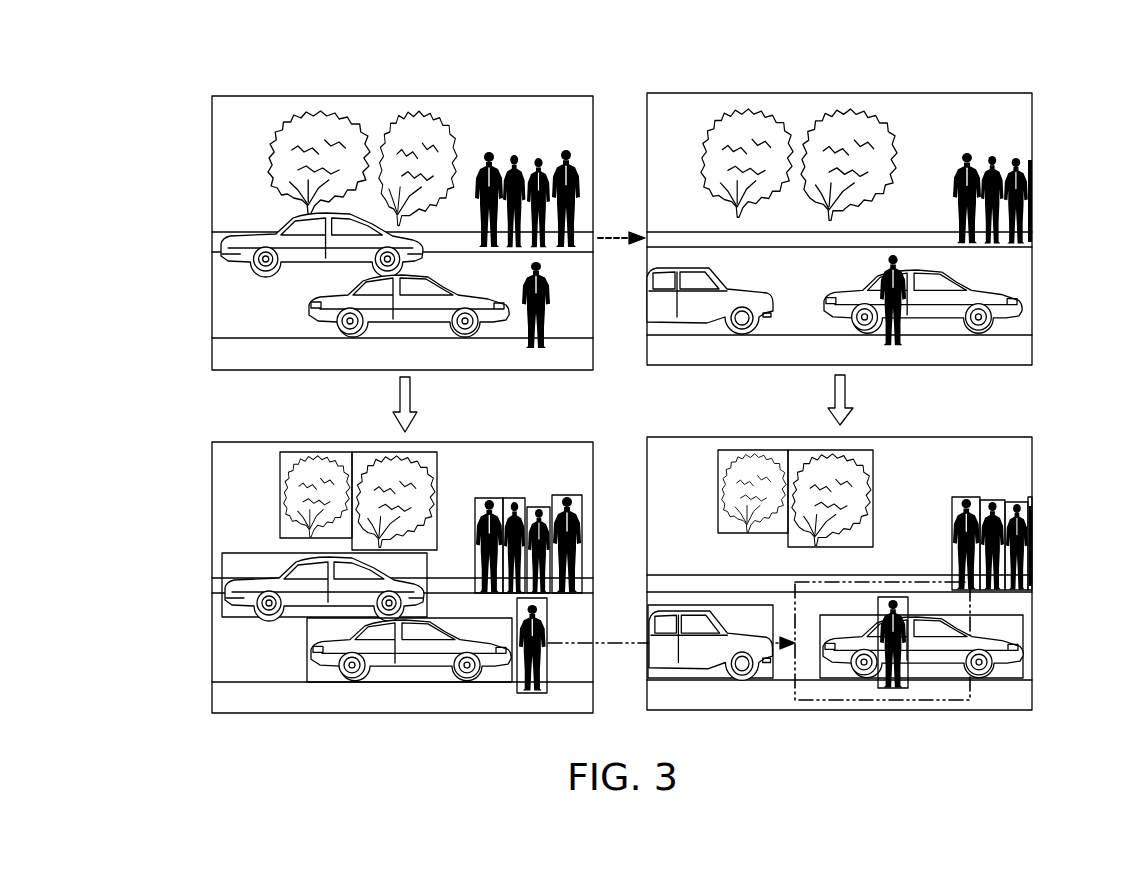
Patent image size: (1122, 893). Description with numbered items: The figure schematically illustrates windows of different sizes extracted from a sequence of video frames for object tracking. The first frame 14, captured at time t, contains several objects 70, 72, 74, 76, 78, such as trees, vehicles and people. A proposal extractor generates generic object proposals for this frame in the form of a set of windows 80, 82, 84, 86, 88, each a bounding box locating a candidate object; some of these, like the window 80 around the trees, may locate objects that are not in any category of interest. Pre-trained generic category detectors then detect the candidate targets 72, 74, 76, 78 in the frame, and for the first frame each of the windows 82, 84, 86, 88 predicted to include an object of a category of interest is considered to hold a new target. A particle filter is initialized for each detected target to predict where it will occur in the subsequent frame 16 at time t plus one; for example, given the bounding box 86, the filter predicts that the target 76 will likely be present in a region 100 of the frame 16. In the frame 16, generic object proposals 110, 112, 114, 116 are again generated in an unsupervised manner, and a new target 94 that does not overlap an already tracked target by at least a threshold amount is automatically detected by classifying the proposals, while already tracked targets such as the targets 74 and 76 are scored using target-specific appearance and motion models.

The first frame 14 is at (233, 266).
The frame 16 is at (1022, 78).
The object 70 is at (285, 121).
The candidate target 72 is at (275, 216).
The candidate target 74 is at (327, 292).
The candidate target 76 is at (545, 345).
The candidate target 78 is at (535, 170).
The window 80 is at (287, 452).
The window 82 is at (260, 553).
The window 84 is at (308, 640).
The bounding box 86 is at (548, 692).
The window 88 is at (575, 495).
The new target 94 is at (668, 323).
The region 100 is at (884, 700).
The generic object proposal 110 is at (907, 688).
The generic object proposal 112 is at (1020, 615).
The generic object proposal 114 is at (671, 680).
The generic object proposal 116 is at (1015, 498).